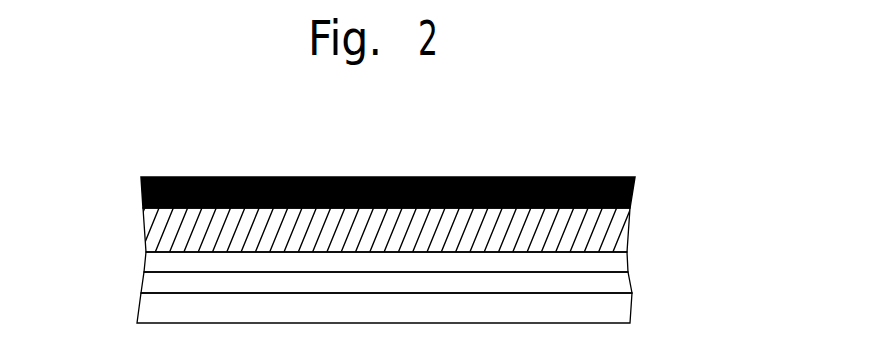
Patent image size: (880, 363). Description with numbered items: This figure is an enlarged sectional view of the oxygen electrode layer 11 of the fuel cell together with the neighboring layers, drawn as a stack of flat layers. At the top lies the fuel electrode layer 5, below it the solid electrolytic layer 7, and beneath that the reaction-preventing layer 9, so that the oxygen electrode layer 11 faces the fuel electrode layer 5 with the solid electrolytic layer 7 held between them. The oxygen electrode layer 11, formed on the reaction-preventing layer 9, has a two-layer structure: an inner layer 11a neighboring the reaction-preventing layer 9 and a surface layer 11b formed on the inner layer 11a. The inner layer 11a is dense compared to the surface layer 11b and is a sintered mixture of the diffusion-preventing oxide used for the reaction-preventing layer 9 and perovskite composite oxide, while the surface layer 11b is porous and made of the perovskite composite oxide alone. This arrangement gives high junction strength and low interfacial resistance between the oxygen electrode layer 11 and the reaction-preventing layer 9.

The fuel electrode layer 5 is at (217, 177).
The solid electrolytic layer 7 is at (143, 229).
The reaction-preventing layer 9 is at (152, 266).
The oxygen electrode layer 11 is at (468, 290).
The inner layer 11a is at (627, 285).
The surface layer 11b is at (627, 309).